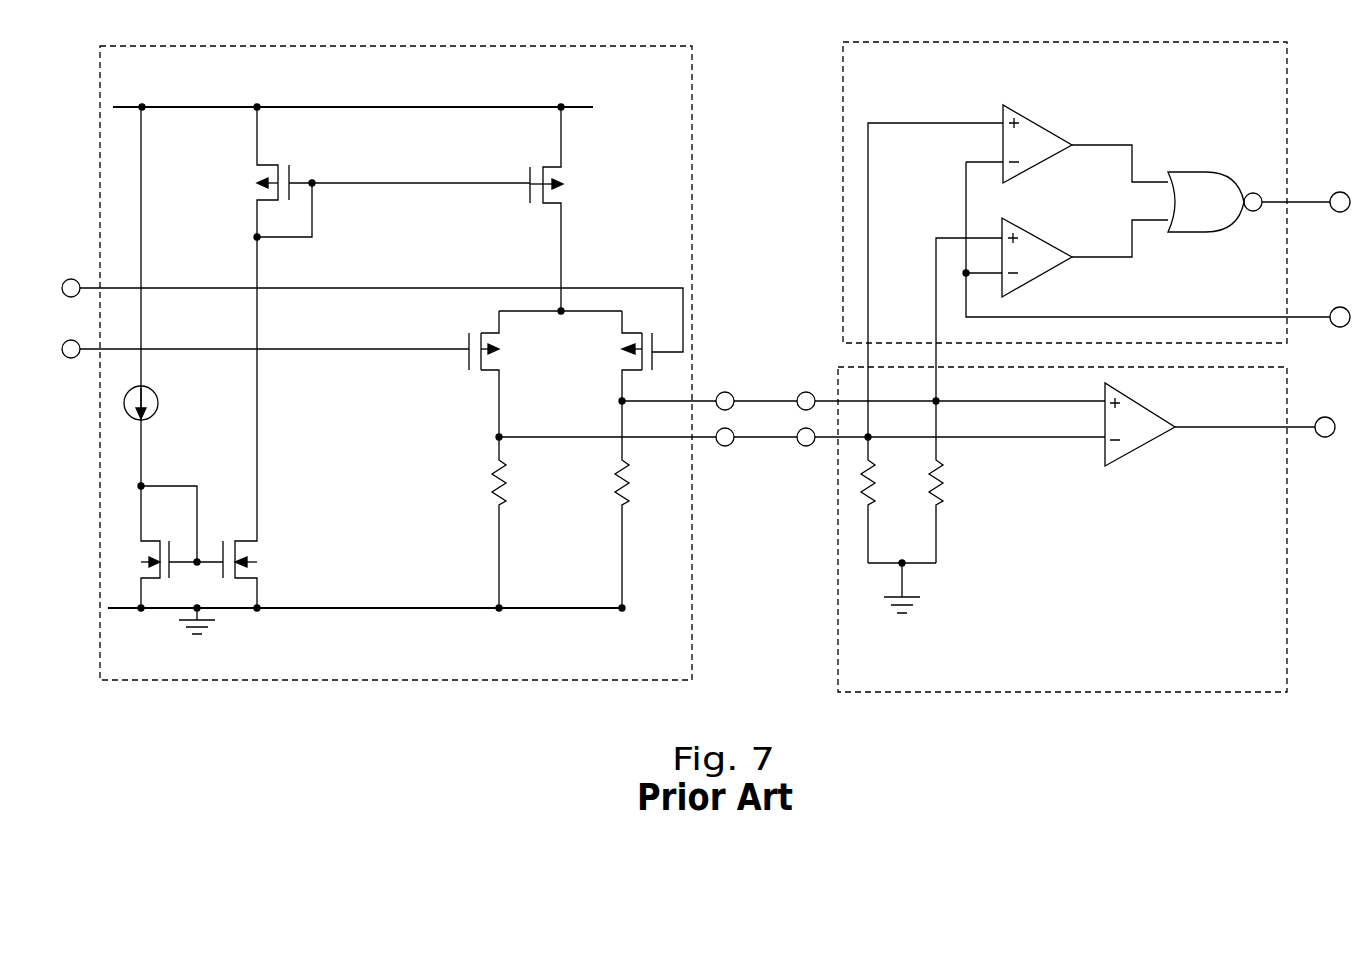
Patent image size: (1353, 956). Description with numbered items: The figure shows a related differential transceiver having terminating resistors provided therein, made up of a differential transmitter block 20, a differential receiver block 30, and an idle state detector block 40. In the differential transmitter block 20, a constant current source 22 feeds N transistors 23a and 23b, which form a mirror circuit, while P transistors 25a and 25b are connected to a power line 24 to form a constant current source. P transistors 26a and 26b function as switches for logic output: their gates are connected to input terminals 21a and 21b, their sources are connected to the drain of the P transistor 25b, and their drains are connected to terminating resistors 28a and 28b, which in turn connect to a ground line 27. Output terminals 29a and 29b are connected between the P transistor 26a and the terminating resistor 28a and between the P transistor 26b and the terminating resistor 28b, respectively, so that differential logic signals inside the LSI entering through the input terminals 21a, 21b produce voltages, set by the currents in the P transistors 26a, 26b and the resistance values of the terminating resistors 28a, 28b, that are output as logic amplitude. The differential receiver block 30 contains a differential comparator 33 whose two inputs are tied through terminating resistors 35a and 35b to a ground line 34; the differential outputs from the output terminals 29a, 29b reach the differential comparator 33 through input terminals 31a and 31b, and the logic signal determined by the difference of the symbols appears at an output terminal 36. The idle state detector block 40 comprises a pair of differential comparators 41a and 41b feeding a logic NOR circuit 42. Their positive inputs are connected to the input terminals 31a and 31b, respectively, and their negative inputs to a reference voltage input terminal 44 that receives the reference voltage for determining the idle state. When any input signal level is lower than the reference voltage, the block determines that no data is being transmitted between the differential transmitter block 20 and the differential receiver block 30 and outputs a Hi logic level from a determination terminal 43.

The differential transmitter block 20 is at (590, 46).
The input terminal 21a is at (68, 278).
The input terminal 21b is at (73, 358).
The constant current source 22 is at (158, 400).
The N channel transistor 23a is at (148, 541).
The N channel transistor 23b is at (250, 549).
The power line 24 is at (453, 108).
The P channel transistor 25a is at (270, 165).
The P channel transistor 25b is at (558, 176).
The P channel transistor 26a is at (622, 356).
The P channel transistor 26b is at (468, 335).
The ground line 27 is at (373, 608).
The terminating resistor 28a is at (628, 490).
The terminating resistor 28b is at (505, 490).
The output terminal 29a is at (727, 391).
The output terminal 29b is at (725, 447).
The differential receiver block 30 is at (1290, 392).
The input terminal 31a is at (806, 391).
The input terminal 31b is at (806, 447).
The differential comparator 33 is at (1145, 410).
The ground line 34 is at (884, 563).
The terminating resistor 35a is at (940, 488).
The terminating resistor 35b is at (872, 488).
The output terminal 36 is at (1325, 440).
The idle state detector block 40 is at (1242, 43).
The differential comparator 41a is at (1048, 122).
The differential comparator 41b is at (1048, 238).
The logic NOR circuit 42 is at (1208, 172).
The determination terminal 43 is at (1338, 191).
The reference voltage input terminal 44 is at (1338, 306).